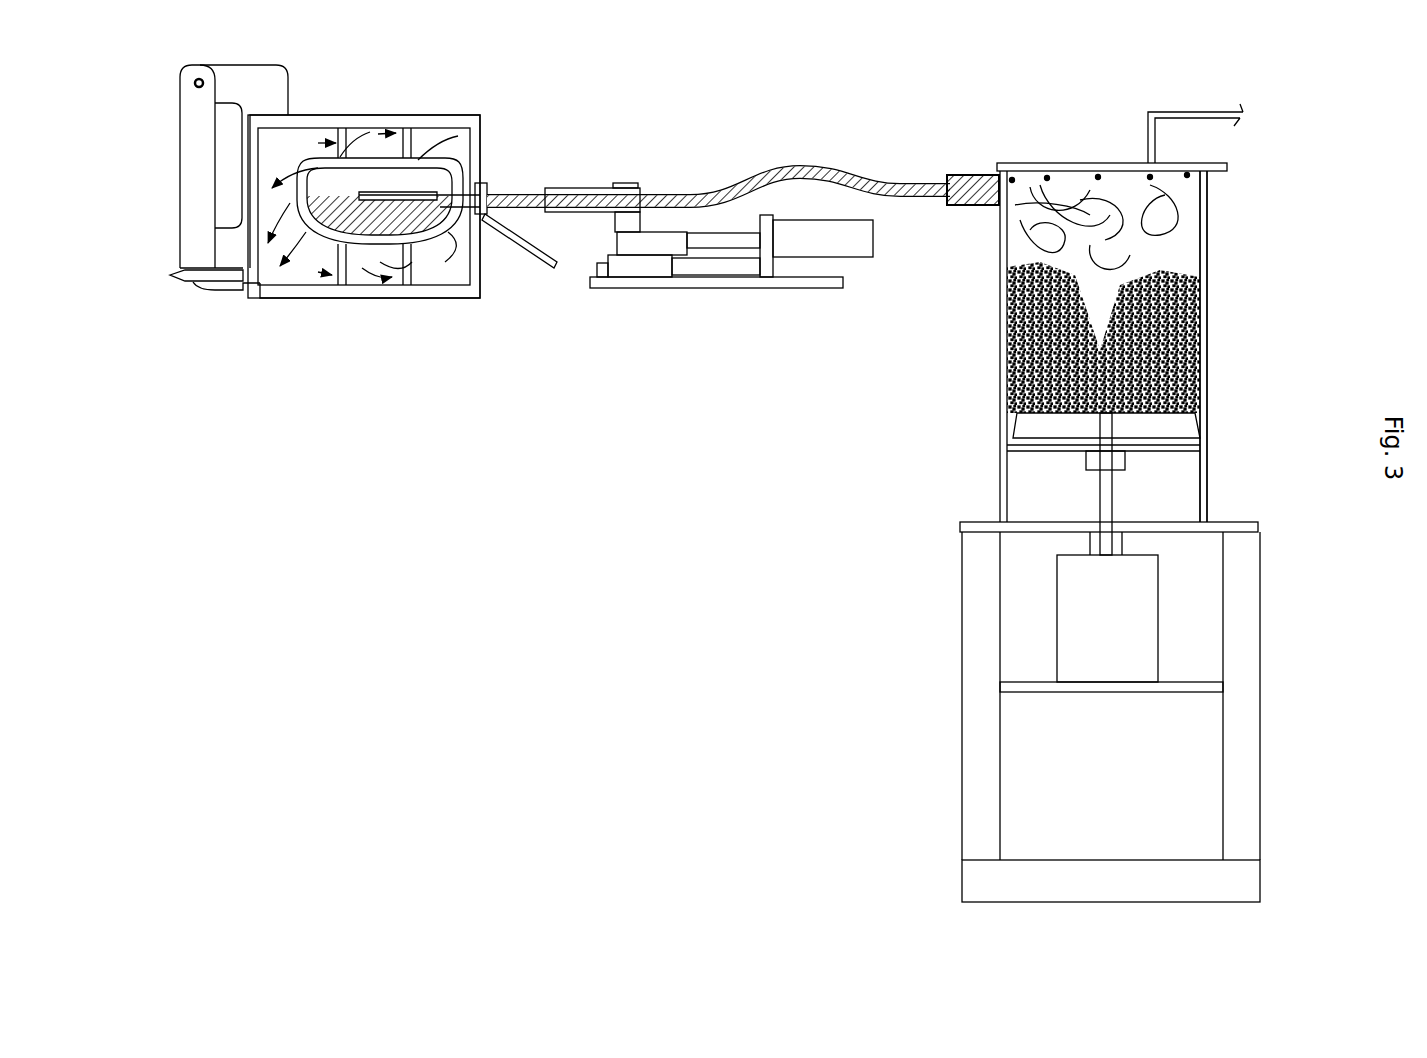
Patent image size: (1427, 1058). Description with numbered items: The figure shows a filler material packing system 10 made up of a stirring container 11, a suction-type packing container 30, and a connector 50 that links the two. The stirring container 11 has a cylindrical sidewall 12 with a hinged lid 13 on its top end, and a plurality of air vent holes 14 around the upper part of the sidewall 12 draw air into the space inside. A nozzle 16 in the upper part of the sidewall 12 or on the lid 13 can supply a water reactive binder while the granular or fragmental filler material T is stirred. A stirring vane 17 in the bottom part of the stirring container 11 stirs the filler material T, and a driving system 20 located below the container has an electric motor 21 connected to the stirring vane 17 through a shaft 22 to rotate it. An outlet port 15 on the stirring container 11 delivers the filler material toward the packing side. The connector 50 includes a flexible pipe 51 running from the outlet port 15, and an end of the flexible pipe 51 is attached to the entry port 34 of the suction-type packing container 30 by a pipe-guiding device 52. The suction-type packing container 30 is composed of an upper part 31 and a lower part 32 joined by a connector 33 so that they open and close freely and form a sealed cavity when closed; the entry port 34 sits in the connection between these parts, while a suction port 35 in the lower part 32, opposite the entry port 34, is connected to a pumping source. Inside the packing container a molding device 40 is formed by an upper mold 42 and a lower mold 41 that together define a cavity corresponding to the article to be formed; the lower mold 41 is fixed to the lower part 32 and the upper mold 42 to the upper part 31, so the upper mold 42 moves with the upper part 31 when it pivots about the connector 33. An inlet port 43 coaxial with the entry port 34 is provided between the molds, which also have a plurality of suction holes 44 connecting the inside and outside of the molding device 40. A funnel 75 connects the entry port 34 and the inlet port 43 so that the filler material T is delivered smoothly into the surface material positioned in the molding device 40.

The filler material packing system 10 is at (640, 538).
The stirring container 11 is at (912, 515).
The cylindrical sidewall 12 is at (1207, 250).
The lid 13 is at (1102, 163).
The air vent holes 14 is at (1046, 174).
The outlet port 15 is at (968, 212).
The nozzle 16 is at (1148, 136).
The stirring vane 17 is at (1178, 425).
The filler material T is at (1207, 316).
The driving system 20 is at (950, 642).
The electric motor 21 is at (1160, 615).
The shaft 22 is at (1113, 490).
The suction-type packing container 30 is at (412, 322).
The upper part 31 is at (308, 115).
The lower part 32 is at (463, 288).
The connector 33 is at (190, 106).
The entry port 34 is at (482, 258).
The suction port 35 is at (242, 280).
The molding device 40 is at (382, 138).
The lower mold 41 is at (323, 237).
The upper mold 42 is at (437, 165).
The inlet port 43 is at (452, 192).
The suction holes 44 is at (390, 268).
The connector 50 is at (713, 314).
The flexible pipe 51 is at (702, 192).
The pipe-guiding device 52 is at (634, 272).
The funnel 75 is at (485, 184).